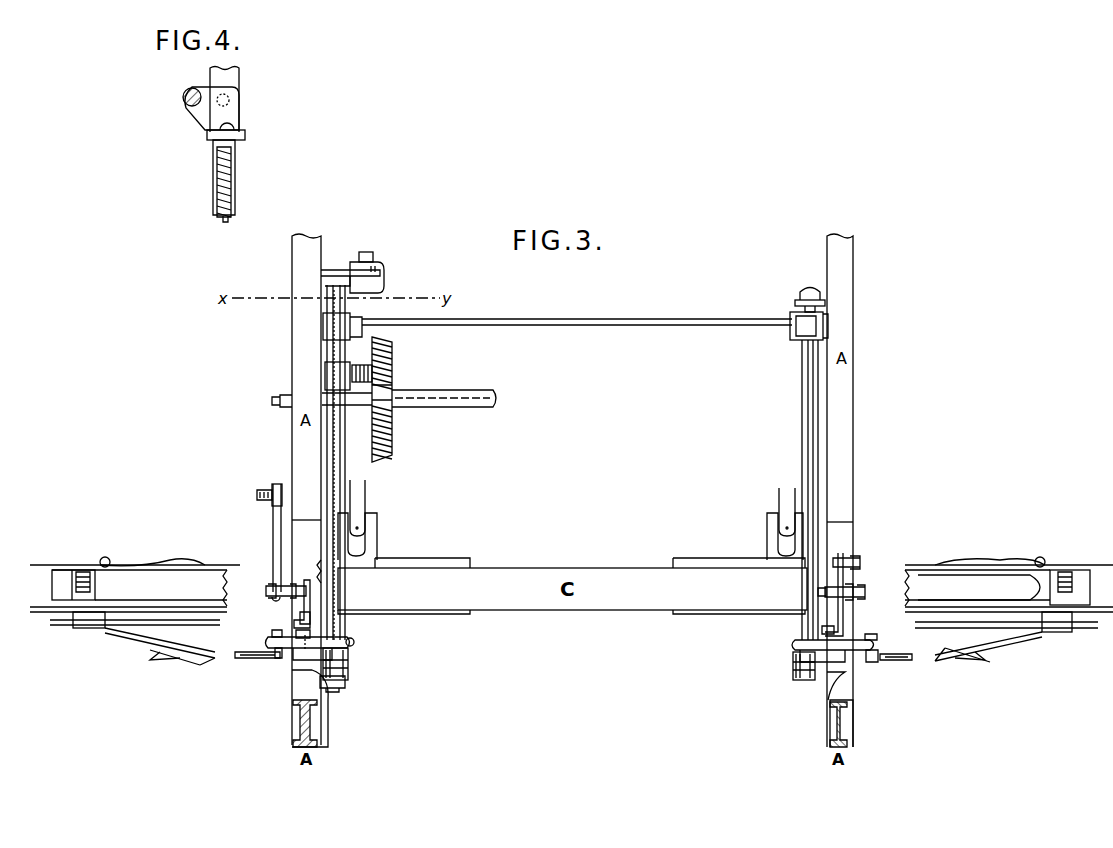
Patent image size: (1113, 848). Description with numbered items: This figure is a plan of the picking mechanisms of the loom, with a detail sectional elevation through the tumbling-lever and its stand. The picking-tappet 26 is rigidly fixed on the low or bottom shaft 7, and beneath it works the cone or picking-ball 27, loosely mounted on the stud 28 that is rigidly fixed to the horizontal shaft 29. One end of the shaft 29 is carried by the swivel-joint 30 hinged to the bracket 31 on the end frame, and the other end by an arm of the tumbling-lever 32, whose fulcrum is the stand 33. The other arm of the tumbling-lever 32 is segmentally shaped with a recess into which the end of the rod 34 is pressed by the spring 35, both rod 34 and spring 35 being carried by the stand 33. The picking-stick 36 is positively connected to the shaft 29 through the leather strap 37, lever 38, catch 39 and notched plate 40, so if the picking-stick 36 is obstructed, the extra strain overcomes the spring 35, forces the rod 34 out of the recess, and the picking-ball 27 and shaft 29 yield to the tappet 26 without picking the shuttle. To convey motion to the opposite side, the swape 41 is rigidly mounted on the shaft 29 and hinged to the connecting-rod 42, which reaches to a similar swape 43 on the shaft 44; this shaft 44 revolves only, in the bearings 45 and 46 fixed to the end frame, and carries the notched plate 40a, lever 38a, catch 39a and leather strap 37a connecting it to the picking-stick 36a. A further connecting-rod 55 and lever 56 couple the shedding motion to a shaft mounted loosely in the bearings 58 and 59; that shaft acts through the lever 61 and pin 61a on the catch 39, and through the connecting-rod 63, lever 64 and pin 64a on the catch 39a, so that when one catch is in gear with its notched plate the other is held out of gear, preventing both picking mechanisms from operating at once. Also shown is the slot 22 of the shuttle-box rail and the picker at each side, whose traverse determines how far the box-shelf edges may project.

In FIG. 3, the low or bottom shaft 7 is at (452, 398).
In FIG. 3, the slot in rail 22 is at (1009, 584).
In FIG. 3, the picking-tappet 26 is at (365, 385).
In FIG. 3, the picking-ball 27 is at (362, 365).
In FIG. 3, the stud 28 is at (350, 405).
In FIG. 4, the horizontal shaft 29 is at (189, 106).
In FIG. 3, the horizontal shaft 29 is at (343, 462).
In FIG. 3, the swivel-joint 30 is at (346, 685).
In FIG. 3, the bracket 31 is at (318, 708).
In FIG. 4, the tumbling-lever 32 is at (212, 108).
In FIG. 3, the tumbling-lever 32 is at (384, 281).
In FIG. 4, the stand 33 is at (224, 125).
In FIG. 3, the stand 33 is at (339, 272).
In FIG. 4, the rod 34 is at (236, 130).
In FIG. 4, the spring 35 is at (231, 185).
In FIG. 3, the picking-stick 36 is at (118, 636).
In FIG. 3, the picking-stick 36a is at (1018, 645).
In FIG. 3, the leather strap 37 is at (238, 660).
In FIG. 3, the leather strap 37a is at (922, 663).
In FIG. 3, the lever 38 is at (354, 642).
In FIG. 3, the lever 38a is at (792, 645).
In FIG. 3, the catch 39 is at (312, 655).
In FIG. 3, the catch 39a is at (835, 656).
In FIG. 3, the notched plate 40 is at (349, 663).
In FIG. 3, the notched plate 40a is at (797, 666).
In FIG. 3, the swape 41 is at (322, 330).
In FIG. 3, the connecting-rod 42 is at (577, 331).
In FIG. 3, the swape 43 is at (792, 338).
In FIG. 3, the shaft 44 is at (799, 490).
In FIG. 3, the bearing 45 is at (803, 296).
In FIG. 3, the bearing 46 is at (822, 686).
In FIG. 3, the connecting-rod 55 is at (258, 500).
In FIG. 3, the lever 56 is at (268, 538).
In FIG. 3, the bearing 58 is at (306, 582).
In FIG. 3, the bearing 59 is at (856, 586).
In FIG. 3, the lever 61 is at (300, 605).
In FIG. 3, the pin 61a is at (300, 633).
In FIG. 3, the connecting-rod 63 is at (857, 560).
In FIG. 3, the lever 64 is at (845, 610).
In FIG. 3, the pin 64a is at (838, 634).